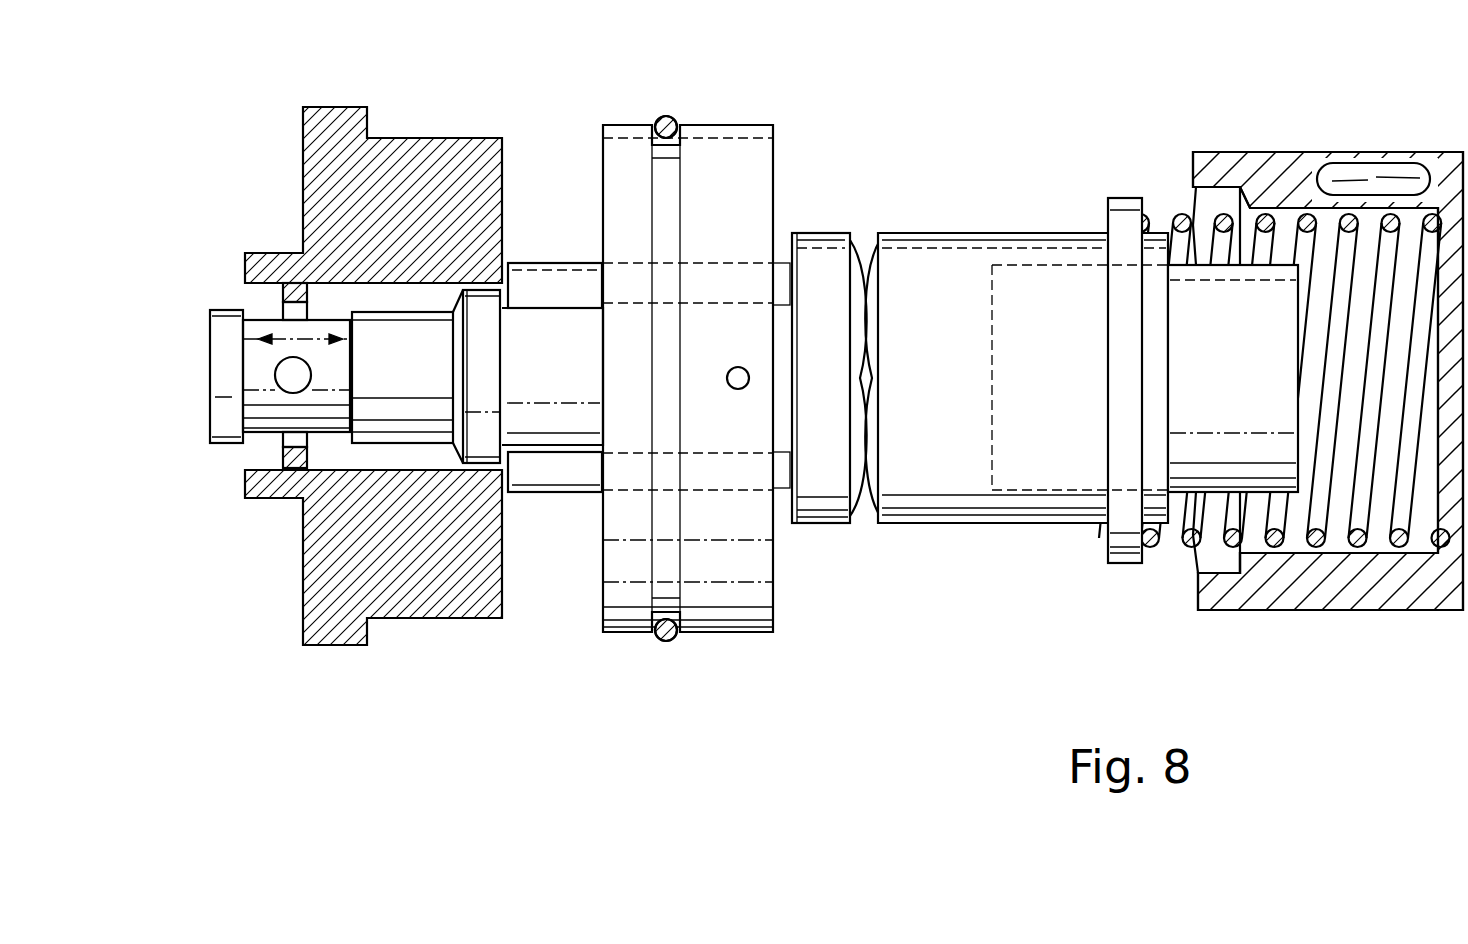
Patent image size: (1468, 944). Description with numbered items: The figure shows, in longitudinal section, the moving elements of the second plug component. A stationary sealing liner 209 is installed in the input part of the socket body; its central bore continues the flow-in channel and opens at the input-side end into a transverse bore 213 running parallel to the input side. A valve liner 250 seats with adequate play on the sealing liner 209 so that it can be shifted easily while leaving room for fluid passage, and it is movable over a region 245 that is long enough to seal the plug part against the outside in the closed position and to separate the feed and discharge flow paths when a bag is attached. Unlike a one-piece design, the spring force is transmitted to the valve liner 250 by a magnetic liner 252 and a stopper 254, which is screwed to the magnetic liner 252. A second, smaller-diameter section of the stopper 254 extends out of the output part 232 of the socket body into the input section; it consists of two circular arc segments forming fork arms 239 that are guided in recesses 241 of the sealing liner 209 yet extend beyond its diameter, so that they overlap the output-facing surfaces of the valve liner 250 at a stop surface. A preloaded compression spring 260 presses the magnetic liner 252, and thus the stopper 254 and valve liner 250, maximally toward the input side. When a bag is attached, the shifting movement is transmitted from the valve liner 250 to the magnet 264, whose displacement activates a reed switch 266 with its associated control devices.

The sealing liner 209 is at (723, 160).
The transverse bore 213 is at (280, 375).
The output part 232 is at (1306, 152).
The fork arms 239 is at (548, 270).
The recesses 241 is at (543, 313).
The region 245 is at (278, 337).
The valve liner 250 is at (424, 190).
The magnetic liner 252 is at (948, 265).
The stopper 254 is at (820, 258).
The compression spring 260 is at (1358, 547).
The magnet 264 is at (1243, 452).
The reed switch 266 is at (1398, 170).